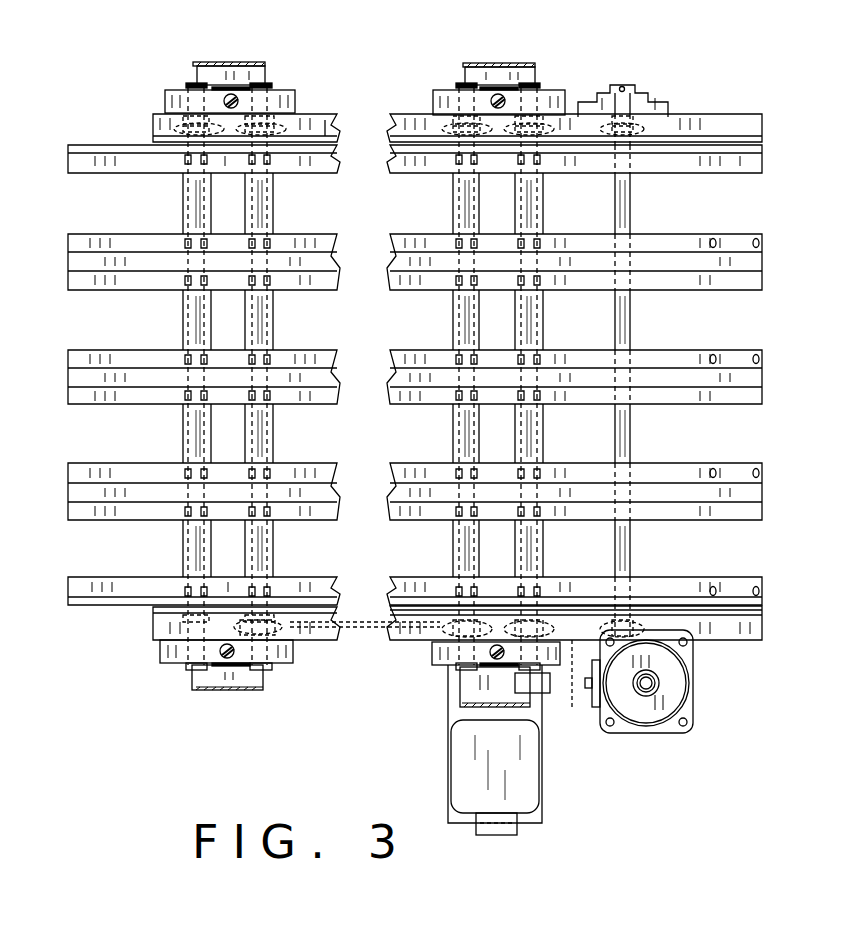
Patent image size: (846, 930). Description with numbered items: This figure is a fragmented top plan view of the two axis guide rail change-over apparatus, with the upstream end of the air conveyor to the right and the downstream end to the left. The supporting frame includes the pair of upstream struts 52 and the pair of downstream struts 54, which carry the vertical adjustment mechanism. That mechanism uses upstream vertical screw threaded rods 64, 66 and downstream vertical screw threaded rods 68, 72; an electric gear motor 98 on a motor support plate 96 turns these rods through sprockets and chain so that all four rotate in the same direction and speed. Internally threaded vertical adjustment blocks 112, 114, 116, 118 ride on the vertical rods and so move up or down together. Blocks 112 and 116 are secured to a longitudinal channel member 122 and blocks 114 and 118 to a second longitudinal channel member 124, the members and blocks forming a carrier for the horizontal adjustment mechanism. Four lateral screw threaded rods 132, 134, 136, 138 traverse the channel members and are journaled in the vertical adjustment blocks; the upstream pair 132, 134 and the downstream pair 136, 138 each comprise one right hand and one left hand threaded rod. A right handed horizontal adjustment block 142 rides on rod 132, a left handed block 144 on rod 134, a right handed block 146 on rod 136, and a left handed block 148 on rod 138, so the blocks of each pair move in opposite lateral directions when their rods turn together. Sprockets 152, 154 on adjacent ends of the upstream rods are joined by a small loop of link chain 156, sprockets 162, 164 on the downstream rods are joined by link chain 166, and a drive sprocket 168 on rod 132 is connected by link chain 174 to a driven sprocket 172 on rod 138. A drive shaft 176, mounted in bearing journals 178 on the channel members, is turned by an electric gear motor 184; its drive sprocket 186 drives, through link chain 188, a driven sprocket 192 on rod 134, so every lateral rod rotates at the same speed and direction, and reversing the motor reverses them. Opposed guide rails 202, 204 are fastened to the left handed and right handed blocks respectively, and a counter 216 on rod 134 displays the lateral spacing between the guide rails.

The upstream struts 52 is at (477, 63).
The downstream struts 54 is at (205, 63).
The upstream vertical screw threaded rod 64 is at (497, 658).
The upstream vertical screw threaded rod 66 is at (498, 94).
The downstream vertical screw threaded rod 68 is at (228, 657).
The downstream vertical screw threaded rod 72 is at (233, 95).
The motor support plate 96 is at (455, 713).
The electric gear motor 98 is at (525, 795).
The vertical adjustment block 112 is at (445, 655).
The vertical adjustment block 114 is at (550, 98).
The vertical adjustment block 116 is at (172, 652).
The vertical adjustment block 118 is at (176, 98).
The longitudinal channel member 122 is at (162, 625).
The second longitudinal channel member 124 is at (166, 122).
The upstream lateral screw threaded rod 132 is at (470, 84).
The upstream lateral screw threaded rod 134 is at (530, 84).
The downstream lateral screw threaded rod 136 is at (197, 84).
The downstream lateral screw threaded rod 138 is at (268, 84).
The right handed horizontal adjustment block 142 is at (460, 447).
The left handed horizontal adjustment block 144 is at (540, 420).
The right handed horizontal adjustment block 146 is at (185, 447).
The left handed horizontal adjustment block 148 is at (270, 447).
The sprocket 152 is at (440, 125).
The sprocket 154 is at (630, 100).
The link chain 156 is at (460, 110).
The sprocket 162 is at (172, 129).
The sprocket 164 is at (326, 116).
The link chain 166 is at (262, 96).
The drive sprocket 168 is at (420, 636).
The driven sprocket 172 is at (290, 636).
The link chain 174 is at (293, 632).
The drive shaft 176 is at (622, 452).
The bearing journals 178 is at (660, 105).
The electric gear motor 184 is at (665, 695).
The drive sprocket 186 is at (650, 578).
The link chain 188 is at (588, 578).
The driven sprocket 192 is at (552, 677).
The guide rail 202 is at (90, 160).
The guide rail 204 is at (90, 242).
The counter 216 is at (540, 695).